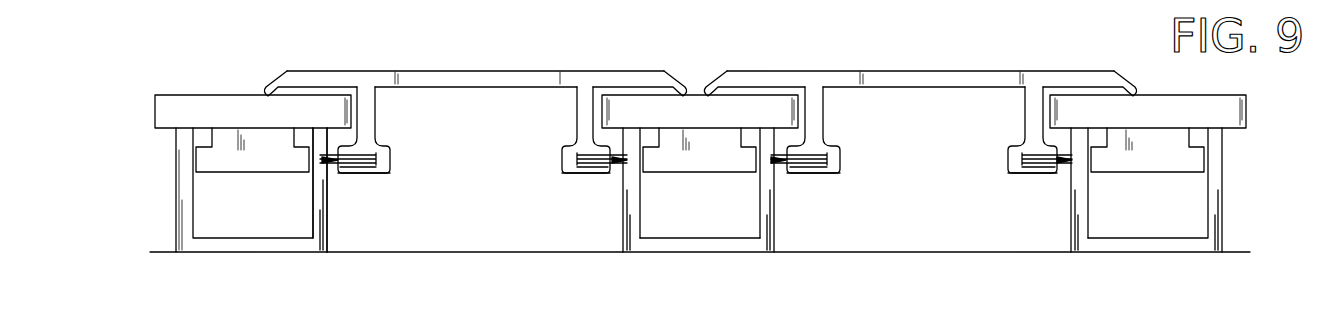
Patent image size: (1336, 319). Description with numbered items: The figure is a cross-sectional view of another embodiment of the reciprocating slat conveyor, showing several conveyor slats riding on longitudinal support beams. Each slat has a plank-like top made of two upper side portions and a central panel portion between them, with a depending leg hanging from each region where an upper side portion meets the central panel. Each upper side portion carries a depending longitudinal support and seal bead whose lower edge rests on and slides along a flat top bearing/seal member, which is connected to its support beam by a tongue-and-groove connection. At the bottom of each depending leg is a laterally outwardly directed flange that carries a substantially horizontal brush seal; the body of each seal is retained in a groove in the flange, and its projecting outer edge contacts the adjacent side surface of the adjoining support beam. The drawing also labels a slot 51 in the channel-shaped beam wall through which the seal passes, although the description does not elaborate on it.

The slot in channel wall 51 is at (624, 163).